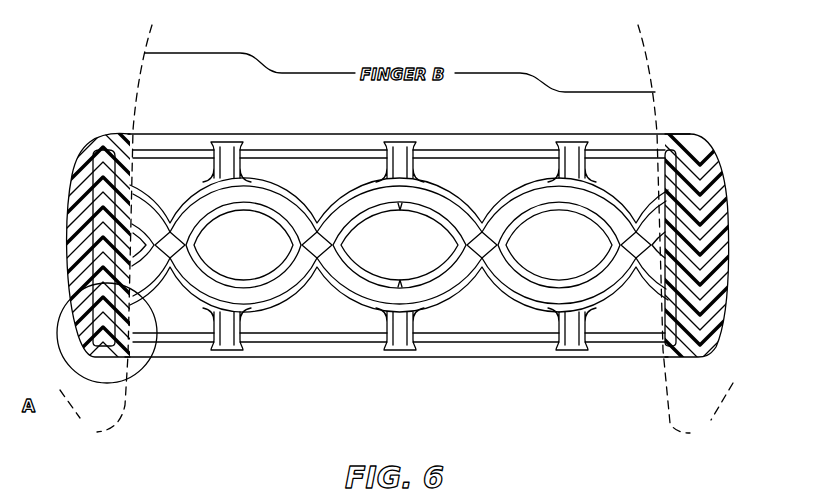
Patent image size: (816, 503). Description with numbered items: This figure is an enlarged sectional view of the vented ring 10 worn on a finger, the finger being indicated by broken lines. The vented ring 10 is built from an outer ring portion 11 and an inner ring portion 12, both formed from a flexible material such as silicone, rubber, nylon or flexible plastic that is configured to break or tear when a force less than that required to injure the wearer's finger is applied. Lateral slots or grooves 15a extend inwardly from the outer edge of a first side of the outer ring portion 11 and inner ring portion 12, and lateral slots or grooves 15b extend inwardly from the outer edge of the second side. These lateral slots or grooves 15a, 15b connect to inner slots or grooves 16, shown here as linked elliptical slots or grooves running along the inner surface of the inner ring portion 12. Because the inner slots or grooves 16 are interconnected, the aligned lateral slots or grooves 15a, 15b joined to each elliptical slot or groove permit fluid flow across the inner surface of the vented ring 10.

The vented ring 10 is at (533, 366).
The outer ring portion 11 is at (76, 206).
The inner ring portion 12 is at (103, 190).
The lateral slots or grooves 15a is at (125, 357).
The lateral slots or grooves 15b is at (225, 140).
The inner slots or grooves 16 is at (348, 205).